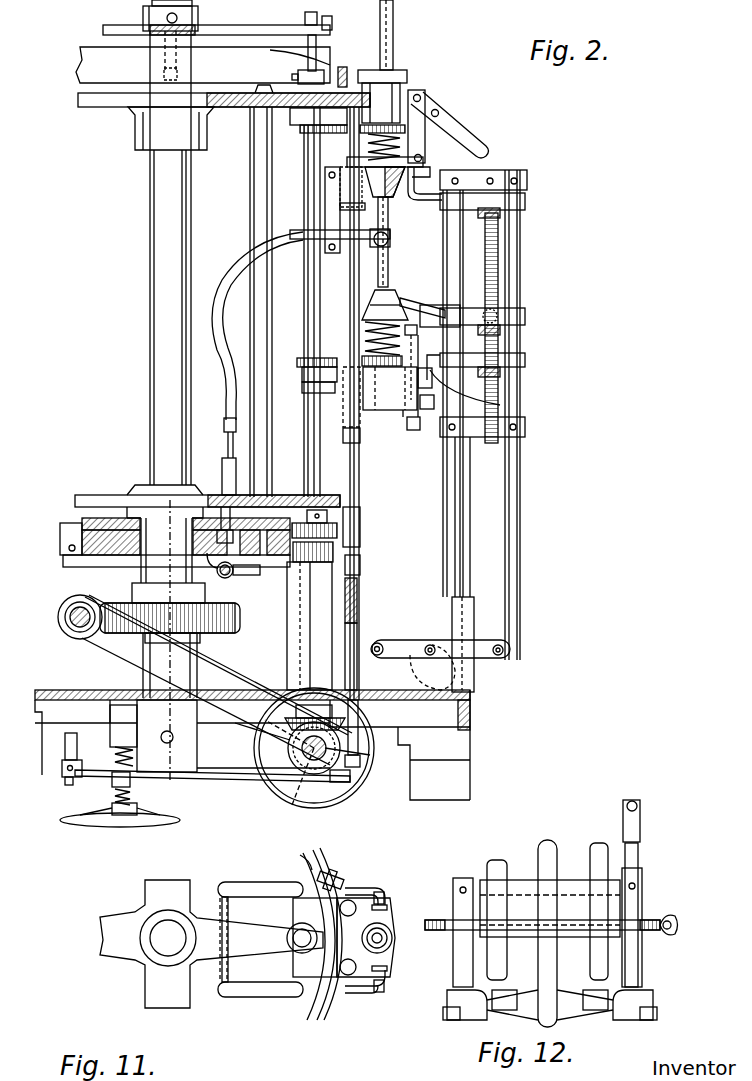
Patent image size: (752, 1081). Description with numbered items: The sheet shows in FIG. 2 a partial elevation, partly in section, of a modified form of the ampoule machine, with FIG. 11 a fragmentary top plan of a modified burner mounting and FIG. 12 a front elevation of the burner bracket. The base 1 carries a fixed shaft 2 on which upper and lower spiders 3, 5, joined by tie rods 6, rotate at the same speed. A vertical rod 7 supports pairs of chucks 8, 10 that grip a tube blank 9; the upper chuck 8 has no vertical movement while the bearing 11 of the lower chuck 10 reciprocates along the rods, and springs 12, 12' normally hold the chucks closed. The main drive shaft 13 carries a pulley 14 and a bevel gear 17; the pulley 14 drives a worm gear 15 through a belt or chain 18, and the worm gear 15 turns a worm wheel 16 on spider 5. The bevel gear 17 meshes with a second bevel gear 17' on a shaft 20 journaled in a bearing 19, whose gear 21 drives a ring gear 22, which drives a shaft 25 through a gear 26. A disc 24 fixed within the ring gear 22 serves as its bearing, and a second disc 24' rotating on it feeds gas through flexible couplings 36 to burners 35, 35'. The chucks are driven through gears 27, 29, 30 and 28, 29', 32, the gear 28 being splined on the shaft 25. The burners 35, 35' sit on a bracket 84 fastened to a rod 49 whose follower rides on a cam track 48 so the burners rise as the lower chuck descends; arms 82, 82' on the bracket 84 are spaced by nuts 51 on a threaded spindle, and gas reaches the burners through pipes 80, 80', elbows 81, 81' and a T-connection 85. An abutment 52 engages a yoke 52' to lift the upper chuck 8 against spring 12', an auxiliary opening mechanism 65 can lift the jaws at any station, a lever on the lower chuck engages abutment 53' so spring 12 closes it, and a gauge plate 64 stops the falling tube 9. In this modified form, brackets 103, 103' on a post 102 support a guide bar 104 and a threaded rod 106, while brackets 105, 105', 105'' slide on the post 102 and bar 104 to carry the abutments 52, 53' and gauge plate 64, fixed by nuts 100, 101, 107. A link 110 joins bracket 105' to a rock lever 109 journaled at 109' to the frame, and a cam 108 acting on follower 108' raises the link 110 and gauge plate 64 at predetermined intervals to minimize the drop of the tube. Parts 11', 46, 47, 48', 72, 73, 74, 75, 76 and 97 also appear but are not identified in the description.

In FIG. 2, the base 1 is at (472, 710).
In FIG. 2, the shaft 2 is at (150, 356).
In FIG. 2, the upper spider 3 is at (114, 108).
In FIG. 2, the lower spider 5 is at (110, 496).
In FIG. 2, the tie rods 6 is at (255, 182).
In FIG. 2, the vertical rod 7 is at (356, 462).
In FIG. 2, the upper chuck 8 is at (390, 235).
In FIG. 2, the tube blank 9 is at (395, 25).
In FIG. 2, the lower chuck 10 is at (393, 288).
In FIG. 2, the bearing 11 is at (406, 397).
In FIG. 2, the fitting 11' is at (387, 85).
In FIG. 2, the spring 12 is at (422, 367).
In FIG. 2, the spring 12' is at (324, 210).
In FIG. 2, the main drive shaft 13 is at (362, 760).
In FIG. 2, the pulley 14 is at (305, 806).
In FIG. 2, the worm gear 15 is at (58, 617).
In FIG. 2, the worm wheel 16 is at (120, 603).
In FIG. 2, the bevel gear 17 is at (333, 769).
In FIG. 2, the second bevel gear 17' is at (352, 716).
In FIG. 2, the belt or chain 18 is at (235, 730).
In FIG. 2, the bearing 19 is at (360, 580).
In FIG. 2, the shaft 20 is at (250, 705).
In FIG. 2, the gear 21 is at (362, 546).
In FIG. 2, the ring gear 22 is at (305, 496).
In FIG. 2, the disc 24 is at (233, 577).
In FIG. 2, the second disc 24' is at (46, 522).
In FIG. 2, the shaft 25 is at (313, 444).
In FIG. 2, the gear 26 is at (360, 522).
In FIG. 2, the gear 27 is at (306, 130).
In FIG. 2, the gear 28 is at (310, 360).
In FIG. 2, the gear 29 is at (353, 151).
In FIG. 2, the gear 29' is at (342, 338).
In FIG. 2, the gear 30 is at (438, 112).
In FIG. 2, the gear 32 is at (384, 412).
In FIG. 2, the burner 35 is at (355, 242).
In FIG. 11, the burner 35 is at (395, 991).
In FIG. 11, the burner 35' is at (398, 888).
In FIG. 2, the flexible coupling 36 is at (240, 252).
In FIG. 2, the sleeve 46 is at (362, 500).
In FIG. 2, the arm 47 is at (265, 30).
In FIG. 11, the arm 47 is at (210, 915).
In FIG. 2, the cam track 48 is at (191, 48).
In FIG. 11, the rail end 48' is at (321, 957).
In FIG. 12, the rod 49 is at (640, 836).
In FIG. 11, the nuts 51 is at (332, 870).
In FIG. 12, the nuts 51 is at (668, 914).
In FIG. 2, the abutment 52 is at (433, 167).
In FIG. 2, the yoke 52' is at (425, 194).
In FIG. 2, the abutment 53' is at (498, 390).
In FIG. 2, the gauge plate 64 is at (424, 310).
In FIG. 2, the auxiliary chuck opening mechanism 65 is at (482, 145).
In FIG. 2, the shaft 72 is at (362, 742).
In FIG. 2, the lever 73 is at (365, 765).
In FIG. 2, the bar 74 is at (240, 780).
In FIG. 2, the screw 75 is at (132, 797).
In FIG. 2, the hand wheel 76 is at (106, 826).
In FIG. 11, the pipe 80 is at (366, 991).
In FIG. 11, the pipe 80' is at (366, 882).
In FIG. 11, the elbow 81 is at (260, 1001).
In FIG. 11, the elbow 81' is at (260, 876).
In FIG. 12, the arm 82 is at (484, 949).
In FIG. 12, the arm 82' is at (618, 944).
In FIG. 12, the bracket 84 is at (560, 878).
In FIG. 11, the T-connection 85 is at (230, 968).
In FIG. 11, the curved rail 97 is at (332, 1012).
In FIG. 2, the nut 100 is at (500, 331).
In FIG. 2, the nut 101 is at (500, 214).
In FIG. 2, the post 102 is at (472, 487).
In FIG. 2, the bracket 103 is at (482, 445).
In FIG. 2, the bracket 103' is at (510, 176).
In FIG. 2, the guide bar 104 is at (520, 252).
In FIG. 2, the bracket 105 is at (508, 197).
In FIG. 2, the bracket 105' is at (510, 314).
In FIG. 2, the bracket 105'' is at (505, 364).
In FIG. 2, the threaded rod 106 is at (500, 278).
In FIG. 2, the nut 107 is at (502, 374).
In FIG. 2, the cam 108 is at (426, 644).
In FIG. 2, the follower 108' is at (429, 635).
In FIG. 2, the rock lever 109 is at (451, 661).
In FIG. 2, the journal 109' is at (379, 636).
In FIG. 2, the link 110 is at (512, 572).